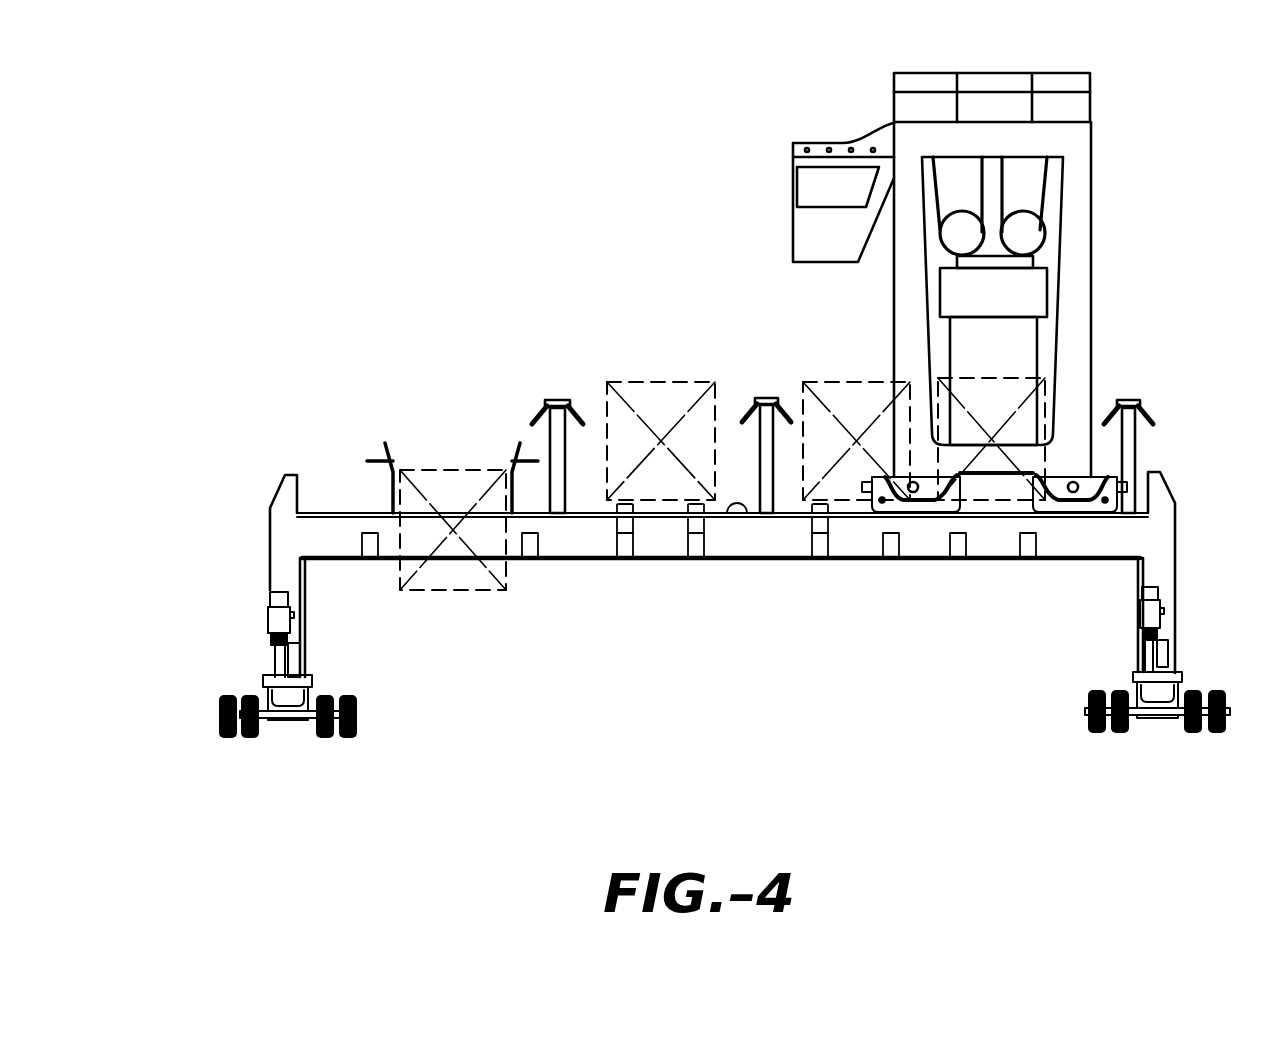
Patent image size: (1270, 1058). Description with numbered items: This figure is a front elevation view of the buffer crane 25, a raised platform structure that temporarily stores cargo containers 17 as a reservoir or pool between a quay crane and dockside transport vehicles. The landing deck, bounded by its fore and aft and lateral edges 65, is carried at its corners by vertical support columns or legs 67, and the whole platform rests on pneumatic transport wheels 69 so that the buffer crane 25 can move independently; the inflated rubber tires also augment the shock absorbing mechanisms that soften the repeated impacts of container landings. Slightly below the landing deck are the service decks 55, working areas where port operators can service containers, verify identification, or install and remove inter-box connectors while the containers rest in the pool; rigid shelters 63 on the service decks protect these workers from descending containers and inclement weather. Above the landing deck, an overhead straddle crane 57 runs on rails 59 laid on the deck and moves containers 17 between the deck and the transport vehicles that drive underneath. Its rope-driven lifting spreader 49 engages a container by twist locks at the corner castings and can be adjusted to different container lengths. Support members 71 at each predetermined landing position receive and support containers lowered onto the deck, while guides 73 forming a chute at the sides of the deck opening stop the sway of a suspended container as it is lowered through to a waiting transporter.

The straddle crane 57 is at (1092, 152).
The lifting spreader 49 is at (1018, 290).
The containers 17 is at (1003, 350).
The rigid shelters 63 is at (540, 412).
The guides 73 is at (517, 453).
The service decks 55 is at (335, 512).
The buffer crane 25 is at (666, 633).
The support members 71 is at (683, 515).
The rails 59 is at (750, 520).
The fore and aft and lateral edges 65 is at (270, 537).
The vertical support columns or legs 67 is at (305, 628).
The pneumatic transport wheels 69 is at (1212, 690).